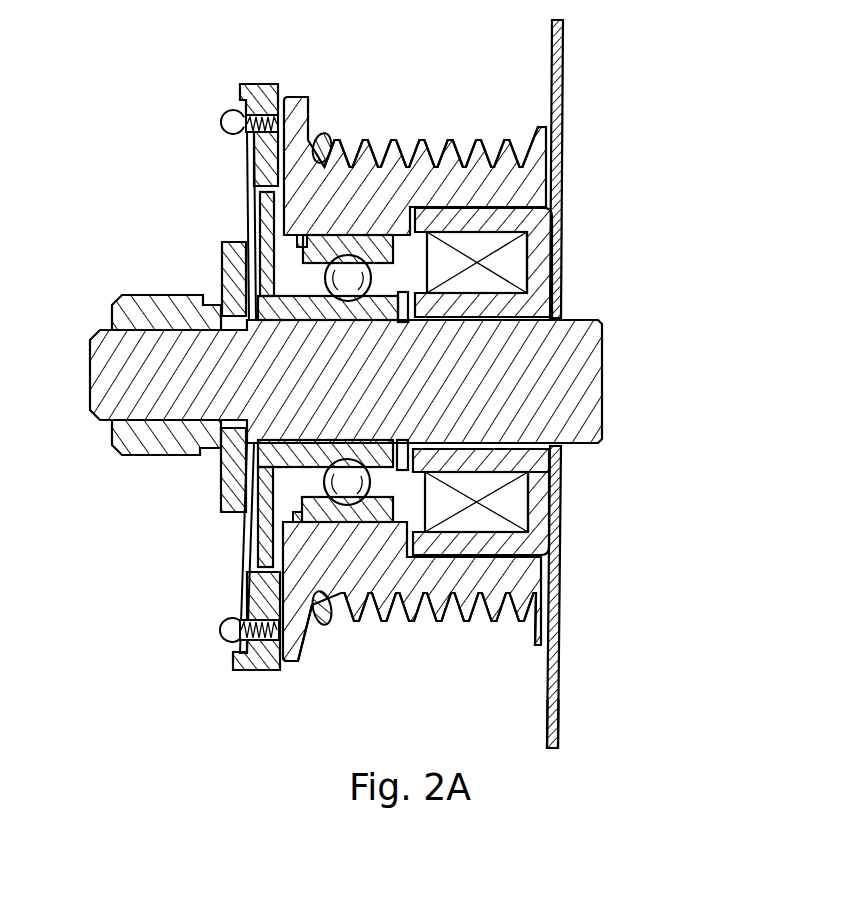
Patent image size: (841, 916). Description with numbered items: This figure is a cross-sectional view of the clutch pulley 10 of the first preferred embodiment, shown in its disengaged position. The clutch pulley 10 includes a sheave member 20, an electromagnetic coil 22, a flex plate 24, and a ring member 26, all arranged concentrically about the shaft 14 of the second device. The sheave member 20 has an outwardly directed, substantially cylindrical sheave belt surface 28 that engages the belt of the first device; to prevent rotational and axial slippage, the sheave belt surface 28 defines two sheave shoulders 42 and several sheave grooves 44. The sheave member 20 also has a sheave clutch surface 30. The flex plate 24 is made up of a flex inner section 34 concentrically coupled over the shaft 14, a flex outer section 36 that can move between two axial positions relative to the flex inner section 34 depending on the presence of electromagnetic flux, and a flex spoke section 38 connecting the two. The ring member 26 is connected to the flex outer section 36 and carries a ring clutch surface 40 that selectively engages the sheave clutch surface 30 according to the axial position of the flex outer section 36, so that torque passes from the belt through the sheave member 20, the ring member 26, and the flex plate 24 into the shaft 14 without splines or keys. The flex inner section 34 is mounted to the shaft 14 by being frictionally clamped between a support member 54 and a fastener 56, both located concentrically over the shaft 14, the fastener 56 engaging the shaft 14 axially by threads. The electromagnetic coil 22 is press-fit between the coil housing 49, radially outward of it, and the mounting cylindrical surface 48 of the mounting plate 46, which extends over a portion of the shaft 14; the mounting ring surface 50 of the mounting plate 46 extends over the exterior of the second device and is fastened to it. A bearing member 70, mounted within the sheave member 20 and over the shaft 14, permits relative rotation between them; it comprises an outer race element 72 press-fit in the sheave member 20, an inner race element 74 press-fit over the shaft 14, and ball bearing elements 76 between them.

The clutch pulley 10 is at (142, 92).
The shaft 14 is at (588, 318).
The sheave member 20 is at (397, 160).
The electromagnetic coil 22 is at (520, 262).
The flex plate 24 is at (253, 183).
The ring member 26 is at (257, 165).
The sheave belt surface 28 is at (487, 143).
The sheave clutch surface 30 is at (287, 129).
The flex inner section 34 is at (221, 300).
The flex outer section 36 is at (247, 150).
The flex spoke section 38 is at (247, 207).
The ring clutch surface 40 is at (283, 127).
The sheave shoulders 42 is at (305, 645).
The sheave grooves 44 is at (342, 620).
The mounting plate 46 is at (560, 575).
The mounting cylindrical surface 48 is at (558, 457).
The coil housing 49 is at (545, 508).
The mounting ring surface 50 is at (560, 673).
The support member 54 is at (227, 512).
The fastener 56 is at (170, 456).
The bearing member 70 is at (310, 495).
The outer race element 72 is at (320, 525).
The inner race element 74 is at (280, 458).
The ball bearing elements 76 is at (340, 483).